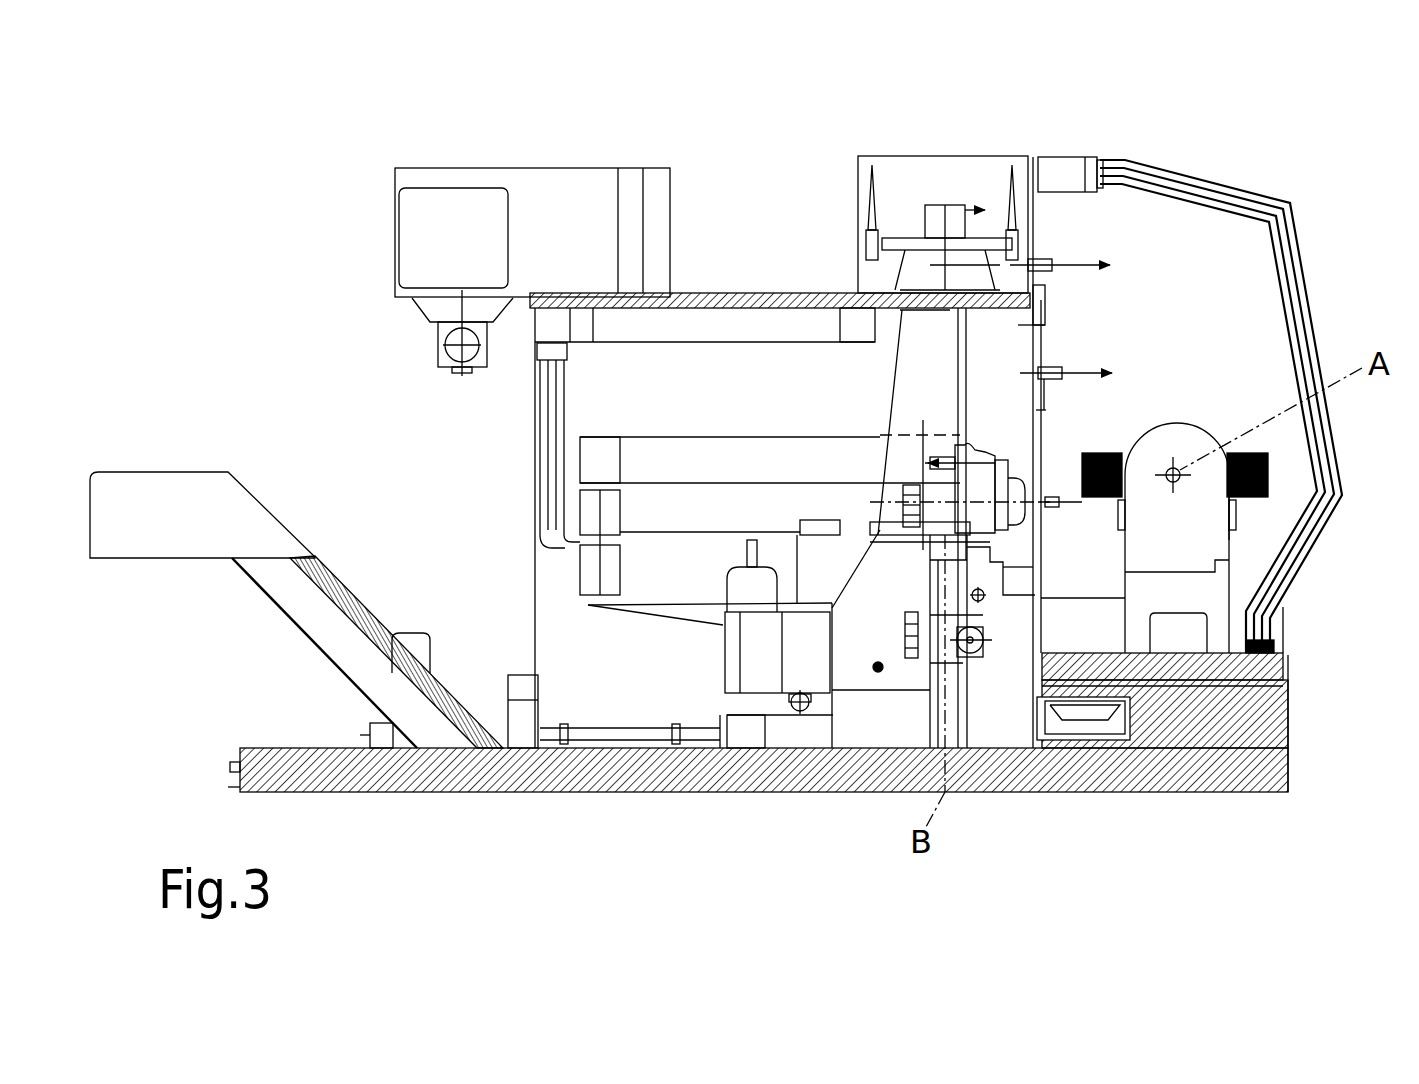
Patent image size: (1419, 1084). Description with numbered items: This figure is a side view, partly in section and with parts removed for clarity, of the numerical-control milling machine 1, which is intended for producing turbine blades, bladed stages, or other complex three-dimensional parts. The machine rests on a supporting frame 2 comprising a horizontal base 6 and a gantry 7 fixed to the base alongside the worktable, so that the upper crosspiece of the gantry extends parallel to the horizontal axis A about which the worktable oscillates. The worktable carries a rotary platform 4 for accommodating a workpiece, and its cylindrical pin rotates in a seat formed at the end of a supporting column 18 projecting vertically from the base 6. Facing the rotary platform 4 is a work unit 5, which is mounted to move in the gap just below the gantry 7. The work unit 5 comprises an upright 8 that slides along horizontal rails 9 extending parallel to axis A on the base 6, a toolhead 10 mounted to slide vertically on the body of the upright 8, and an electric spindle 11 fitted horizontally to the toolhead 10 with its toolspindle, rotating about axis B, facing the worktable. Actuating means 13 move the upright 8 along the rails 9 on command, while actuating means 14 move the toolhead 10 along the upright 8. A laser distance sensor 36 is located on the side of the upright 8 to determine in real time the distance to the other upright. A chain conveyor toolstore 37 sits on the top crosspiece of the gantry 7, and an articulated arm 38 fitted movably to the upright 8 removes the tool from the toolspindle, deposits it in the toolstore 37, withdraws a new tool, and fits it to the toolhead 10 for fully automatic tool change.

The numerical-control milling machine 1 is at (1337, 116).
The supporting frame 2 is at (1302, 665).
The rotary platform 4 is at (1242, 510).
The work unit 5 is at (803, 420).
The horizontal base 6 is at (985, 792).
The gantry 7 is at (765, 290).
The upright 8 is at (890, 400).
The horizontal rails 9 is at (796, 712).
The toolhead 10 is at (740, 475).
The electric spindle 11 is at (1030, 490).
The actuating means 13 is at (980, 600).
The actuating means 14 is at (720, 572).
The supporting column 18 is at (1205, 548).
The laser distance sensor 36 is at (877, 672).
The chain conveyor toolstore 37 is at (906, 194).
The articulated arm 38 is at (1092, 358).